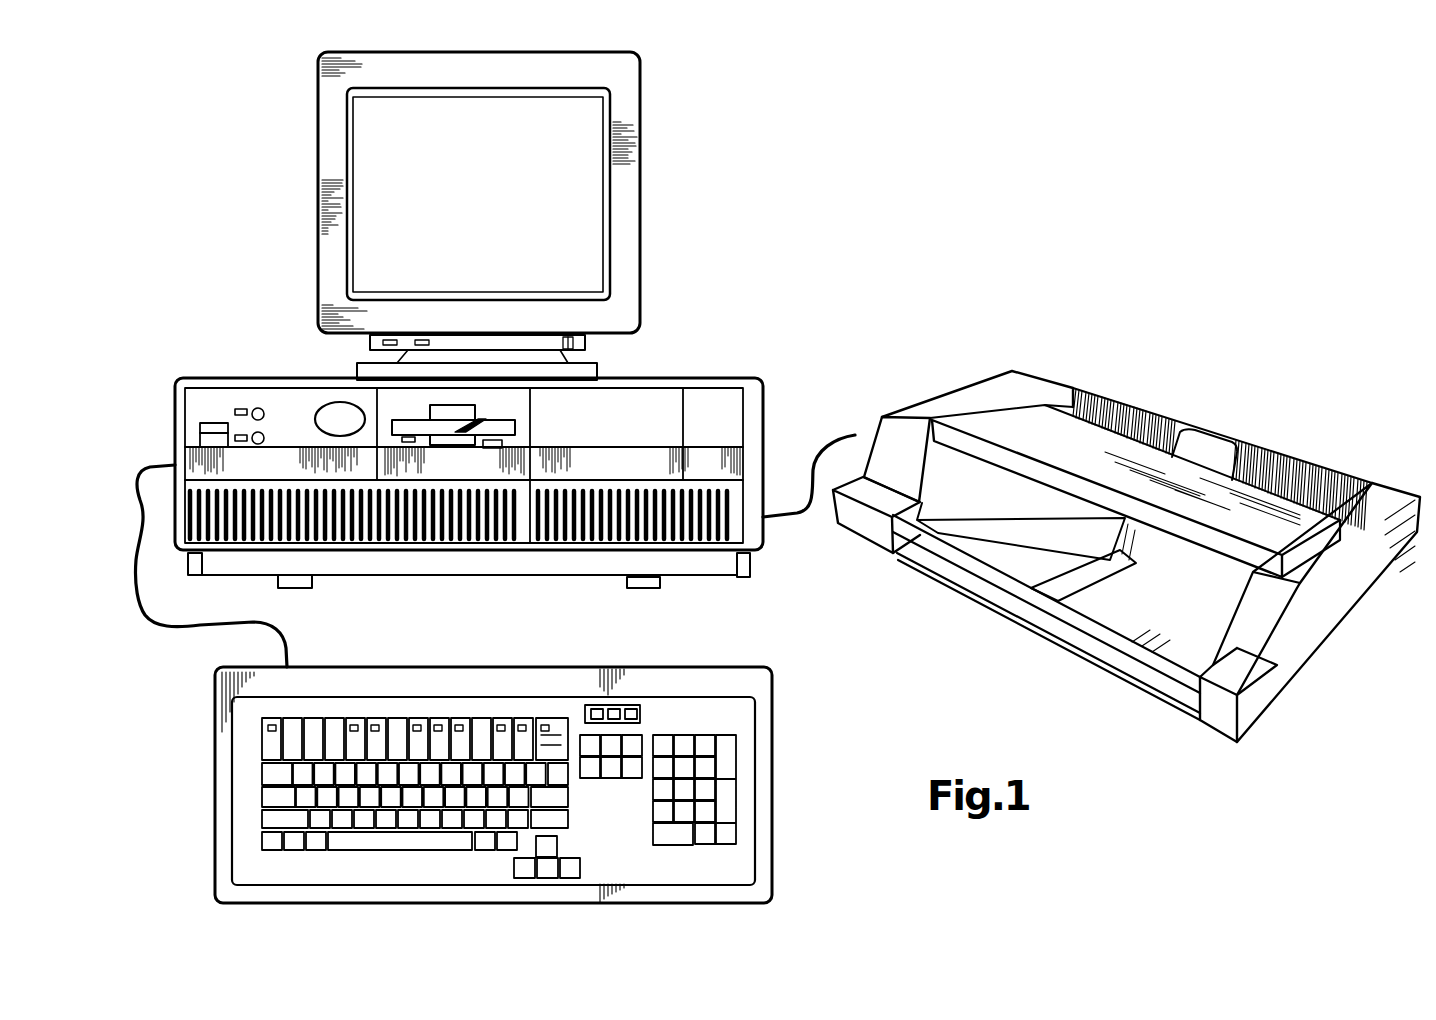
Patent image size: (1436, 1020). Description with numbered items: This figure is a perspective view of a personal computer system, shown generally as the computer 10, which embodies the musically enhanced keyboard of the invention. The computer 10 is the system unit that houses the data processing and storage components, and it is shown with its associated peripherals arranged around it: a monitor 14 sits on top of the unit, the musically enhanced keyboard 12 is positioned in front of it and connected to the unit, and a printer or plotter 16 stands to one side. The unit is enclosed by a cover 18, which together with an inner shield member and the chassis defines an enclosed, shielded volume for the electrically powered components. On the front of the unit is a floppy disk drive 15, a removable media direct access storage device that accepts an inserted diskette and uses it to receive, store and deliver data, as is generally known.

The computer 10 is at (495, 492).
The musically enhanced keyboard 12 is at (450, 667).
The monitor 14 is at (642, 203).
The floppy disk drive 15 is at (462, 430).
The printer or plotter 16 is at (927, 395).
The cover 18 is at (403, 408).